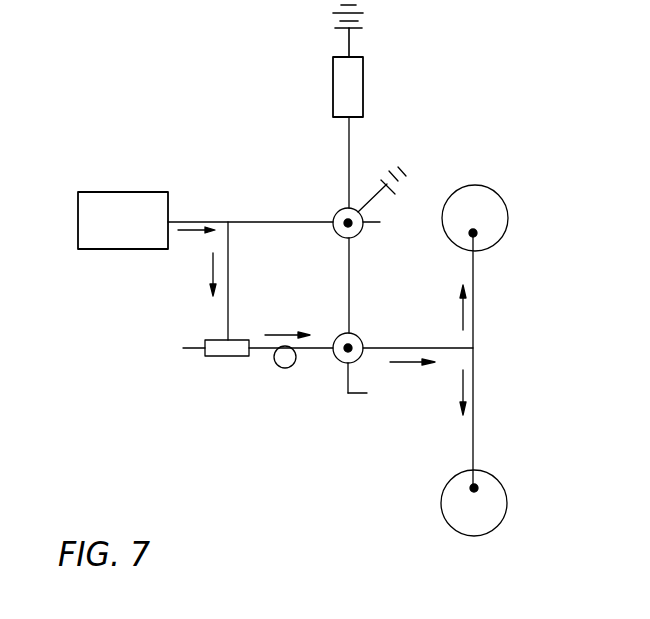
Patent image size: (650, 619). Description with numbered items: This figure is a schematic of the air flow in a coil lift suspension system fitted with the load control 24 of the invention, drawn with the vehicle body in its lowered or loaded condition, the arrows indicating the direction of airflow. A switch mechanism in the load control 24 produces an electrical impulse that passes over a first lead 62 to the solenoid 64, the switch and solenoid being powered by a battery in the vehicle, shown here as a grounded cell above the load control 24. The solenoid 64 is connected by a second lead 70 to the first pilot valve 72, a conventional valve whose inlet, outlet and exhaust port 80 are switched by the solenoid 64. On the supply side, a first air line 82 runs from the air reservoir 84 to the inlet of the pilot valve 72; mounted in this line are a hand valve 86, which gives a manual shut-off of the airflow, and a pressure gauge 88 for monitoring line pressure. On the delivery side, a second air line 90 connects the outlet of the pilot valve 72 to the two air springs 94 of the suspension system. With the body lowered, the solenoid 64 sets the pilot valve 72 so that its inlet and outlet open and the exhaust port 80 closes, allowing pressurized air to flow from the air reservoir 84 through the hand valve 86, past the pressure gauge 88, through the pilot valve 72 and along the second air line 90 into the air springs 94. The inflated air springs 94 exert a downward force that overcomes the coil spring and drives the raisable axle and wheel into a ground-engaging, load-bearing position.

The load control 24 is at (360, 85).
The first lead 62 is at (349, 160).
The solenoid 64 is at (337, 212).
The second lead 70 is at (350, 275).
The first pilot valve 72 is at (340, 335).
The exhaust port 80 is at (353, 395).
The first air line 82 is at (205, 222).
The air reservoir 84 is at (140, 198).
The hand valve 86 is at (230, 360).
The pressure gauge 88 is at (285, 368).
The second air line 90 is at (475, 363).
The air springs 94 is at (497, 205).